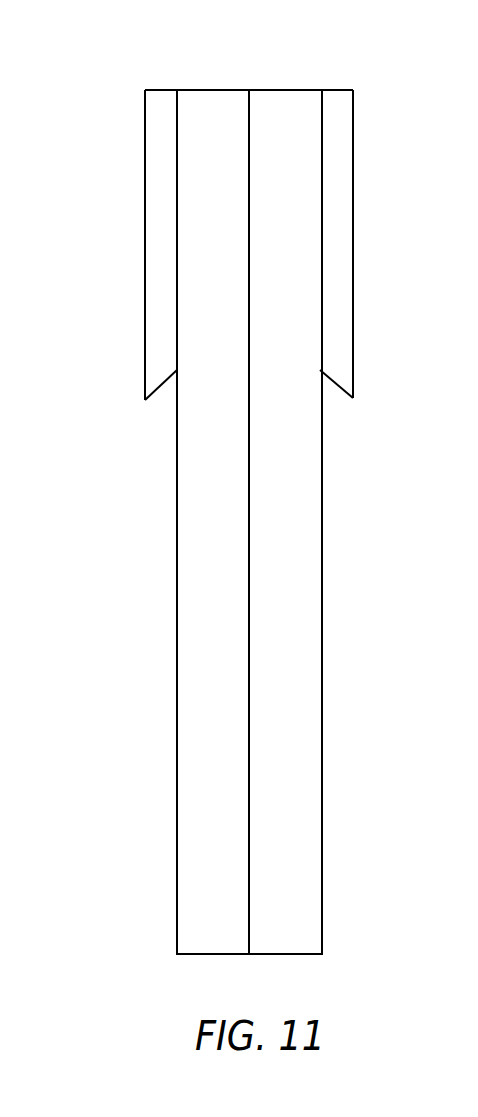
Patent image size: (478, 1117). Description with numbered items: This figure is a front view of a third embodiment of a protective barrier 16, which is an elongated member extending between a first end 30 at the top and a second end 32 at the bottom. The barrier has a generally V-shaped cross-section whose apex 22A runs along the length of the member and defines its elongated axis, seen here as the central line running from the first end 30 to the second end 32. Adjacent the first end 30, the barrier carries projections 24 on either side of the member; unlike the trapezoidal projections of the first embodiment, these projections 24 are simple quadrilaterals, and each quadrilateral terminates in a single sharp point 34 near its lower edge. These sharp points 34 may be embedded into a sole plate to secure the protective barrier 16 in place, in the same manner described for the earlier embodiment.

The protective barrier 16 is at (122, 793).
The first end 30 is at (205, 90).
The apex 22A is at (250, 134).
The projections 24 is at (388, 222).
The sharp point 34 is at (392, 437).
The second end 32 is at (295, 954).